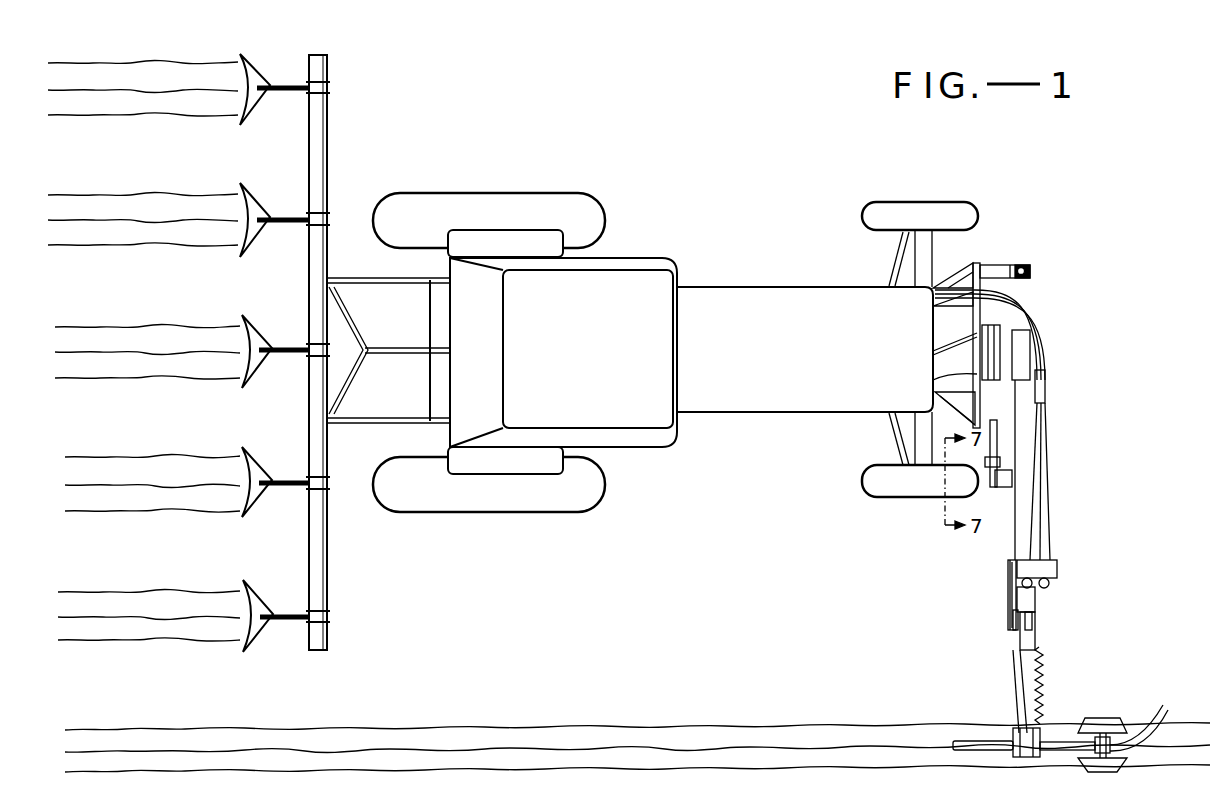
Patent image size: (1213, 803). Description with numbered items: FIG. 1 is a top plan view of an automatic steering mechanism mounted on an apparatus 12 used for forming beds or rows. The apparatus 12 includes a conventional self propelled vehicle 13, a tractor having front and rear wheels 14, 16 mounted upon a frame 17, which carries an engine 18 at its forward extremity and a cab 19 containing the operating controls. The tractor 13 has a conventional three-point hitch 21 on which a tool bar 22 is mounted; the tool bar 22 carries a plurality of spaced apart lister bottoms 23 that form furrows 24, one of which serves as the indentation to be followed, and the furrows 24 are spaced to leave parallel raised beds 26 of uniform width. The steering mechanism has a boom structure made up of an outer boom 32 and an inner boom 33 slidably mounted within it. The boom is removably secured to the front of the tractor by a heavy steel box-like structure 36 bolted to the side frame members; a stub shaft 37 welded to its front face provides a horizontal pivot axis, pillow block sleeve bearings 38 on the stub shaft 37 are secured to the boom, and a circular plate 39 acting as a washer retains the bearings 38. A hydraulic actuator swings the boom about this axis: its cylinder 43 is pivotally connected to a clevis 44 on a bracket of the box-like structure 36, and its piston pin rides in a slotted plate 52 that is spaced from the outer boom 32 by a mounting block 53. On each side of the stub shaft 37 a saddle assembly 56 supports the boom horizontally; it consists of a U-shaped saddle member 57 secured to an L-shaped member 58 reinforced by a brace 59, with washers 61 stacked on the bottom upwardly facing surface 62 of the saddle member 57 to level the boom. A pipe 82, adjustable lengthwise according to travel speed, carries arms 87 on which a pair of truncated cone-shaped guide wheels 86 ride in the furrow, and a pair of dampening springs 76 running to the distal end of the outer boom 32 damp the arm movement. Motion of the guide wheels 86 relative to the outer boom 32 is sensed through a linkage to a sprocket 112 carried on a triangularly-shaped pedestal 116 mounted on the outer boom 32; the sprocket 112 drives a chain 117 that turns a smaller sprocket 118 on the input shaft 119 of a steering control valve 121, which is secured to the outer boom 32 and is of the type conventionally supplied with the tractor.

The apparatus 12 is at (410, 540).
The self propelled vehicle 13 is at (712, 436).
The front wheels 14 is at (878, 205).
The rear wheels 16 is at (454, 205).
The frame 17 is at (920, 428).
The engine 18 is at (782, 400).
The cab 19 is at (640, 410).
The three-point hitch 21 is at (372, 278).
The tool bar 22 is at (320, 556).
The lister bottoms 23 is at (252, 78).
The furrows 24 is at (190, 74).
The raised beds 26 is at (156, 168).
The outer boom 32 is at (1030, 598).
The inner boom 33 is at (1025, 665).
The box-like structure 36 is at (945, 326).
The stub shaft 37 is at (1012, 330).
The sleeve bearings 38 is at (1028, 320).
The circular plate 39 is at (1044, 345).
The cylinder 43 is at (945, 376).
The clevis 44 is at (945, 350).
The plate 52 is at (1000, 465).
The mounting block 53 is at (1010, 478).
The saddle assembly 56 is at (992, 254).
The U-shaped saddle member 57 is at (1007, 266).
The L-shaped member 58 is at (975, 265).
The brace 59 is at (945, 270).
The washers 61 is at (1031, 266).
The bottom upwardly facing surface 62 is at (1024, 266).
The dampening springs 76 is at (1044, 688).
The pipe 82 is at (988, 745).
The cone-shaped guide wheels 86 is at (1105, 718).
The arms 87 is at (1146, 723).
The sprocket 112 is at (1010, 618).
The triangularly-shaped pedestal 116 is at (1035, 614).
The chain 117 is at (1010, 590).
The smaller sprocket 118 is at (1010, 575).
The input shaft 119 is at (1008, 562).
The steering control valve 121 is at (1050, 567).